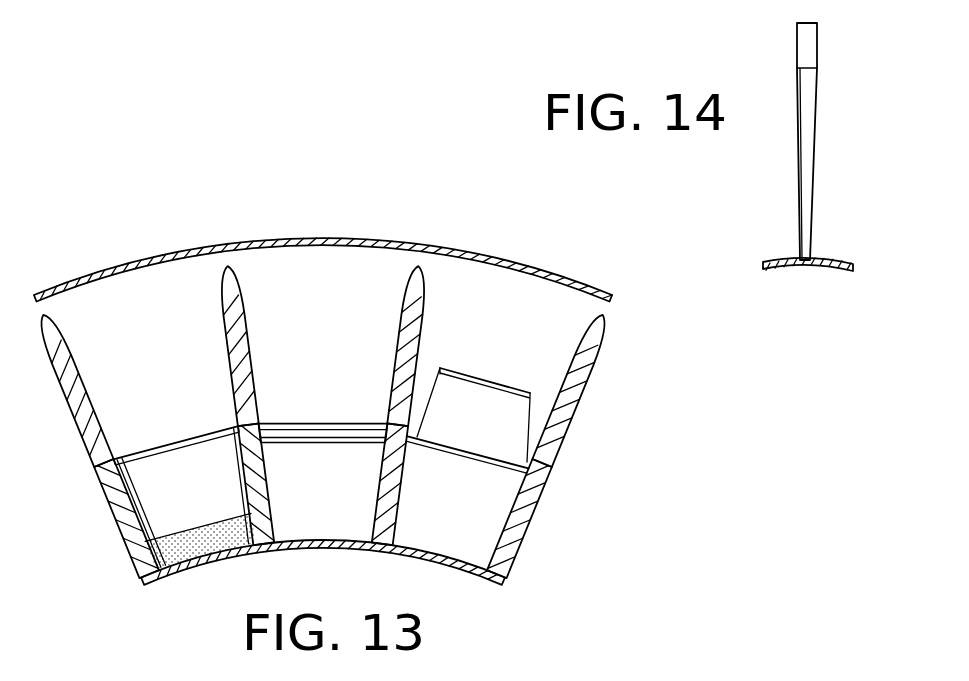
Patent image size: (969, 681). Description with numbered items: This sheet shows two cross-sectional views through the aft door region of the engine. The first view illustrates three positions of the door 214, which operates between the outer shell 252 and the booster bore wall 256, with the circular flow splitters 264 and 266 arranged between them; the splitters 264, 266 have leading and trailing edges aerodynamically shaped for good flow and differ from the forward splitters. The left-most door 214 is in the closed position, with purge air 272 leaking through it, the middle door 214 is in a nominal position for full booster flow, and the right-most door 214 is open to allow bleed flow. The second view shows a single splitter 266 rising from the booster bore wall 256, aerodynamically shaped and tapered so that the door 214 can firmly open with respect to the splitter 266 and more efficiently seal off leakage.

In FIG. 13, the door 214 is at (296, 425).
In FIG. 13, the outer shell 252 is at (150, 256).
In FIG. 13, the booster bore wall 256 is at (193, 568).
In FIG. 14, the booster bore wall 256 is at (837, 272).
In FIG. 13, the flow splitter 264 is at (228, 347).
In FIG. 14, the flow splitter 264 is at (797, 50).
In FIG. 13, the flow splitter 266 is at (243, 469).
In FIG. 14, the flow splitter 266 is at (800, 210).
In FIG. 13, the purge air 272 is at (168, 547).